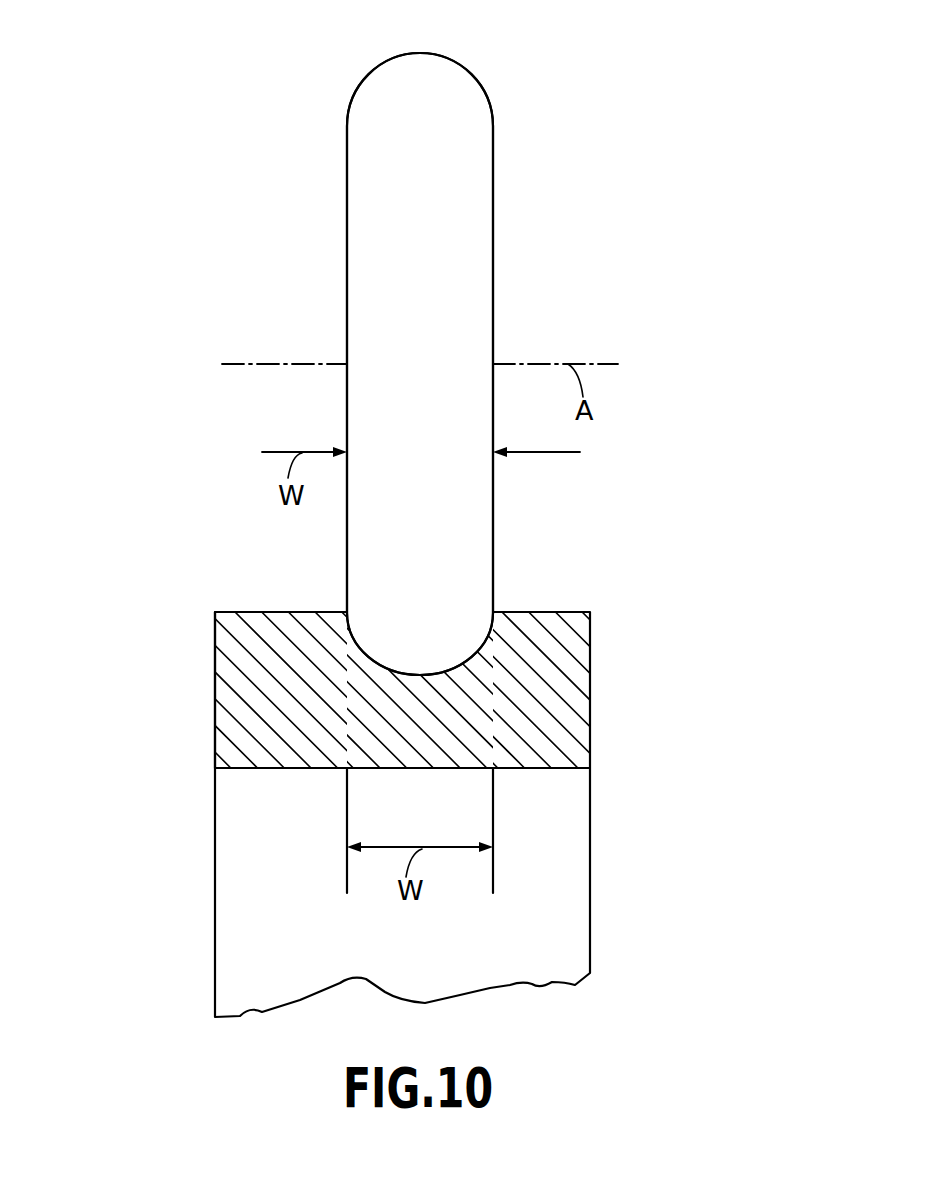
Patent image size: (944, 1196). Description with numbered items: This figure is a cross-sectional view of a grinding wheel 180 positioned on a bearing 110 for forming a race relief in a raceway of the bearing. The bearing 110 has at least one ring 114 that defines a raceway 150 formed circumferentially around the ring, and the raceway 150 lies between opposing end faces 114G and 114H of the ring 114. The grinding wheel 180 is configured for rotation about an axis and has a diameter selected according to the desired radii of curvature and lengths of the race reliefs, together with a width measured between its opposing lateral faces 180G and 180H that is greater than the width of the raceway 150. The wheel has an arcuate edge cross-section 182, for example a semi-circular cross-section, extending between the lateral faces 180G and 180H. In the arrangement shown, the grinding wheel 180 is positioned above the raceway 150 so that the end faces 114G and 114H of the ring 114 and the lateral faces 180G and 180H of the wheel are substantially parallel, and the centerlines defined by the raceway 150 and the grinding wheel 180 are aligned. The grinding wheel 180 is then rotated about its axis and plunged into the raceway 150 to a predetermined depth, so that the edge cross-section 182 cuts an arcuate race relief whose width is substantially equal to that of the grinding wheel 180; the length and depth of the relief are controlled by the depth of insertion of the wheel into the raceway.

The bearing 110 is at (125, 797).
The ring 114 is at (573, 712).
The end face 114G is at (590, 745).
The end face 114H is at (215, 660).
The raceway 150 is at (476, 660).
The grinding wheel 180 is at (458, 185).
The lateral face 180G is at (493, 267).
The lateral face 180H is at (346, 252).
The edge cross-section 182 is at (422, 51).